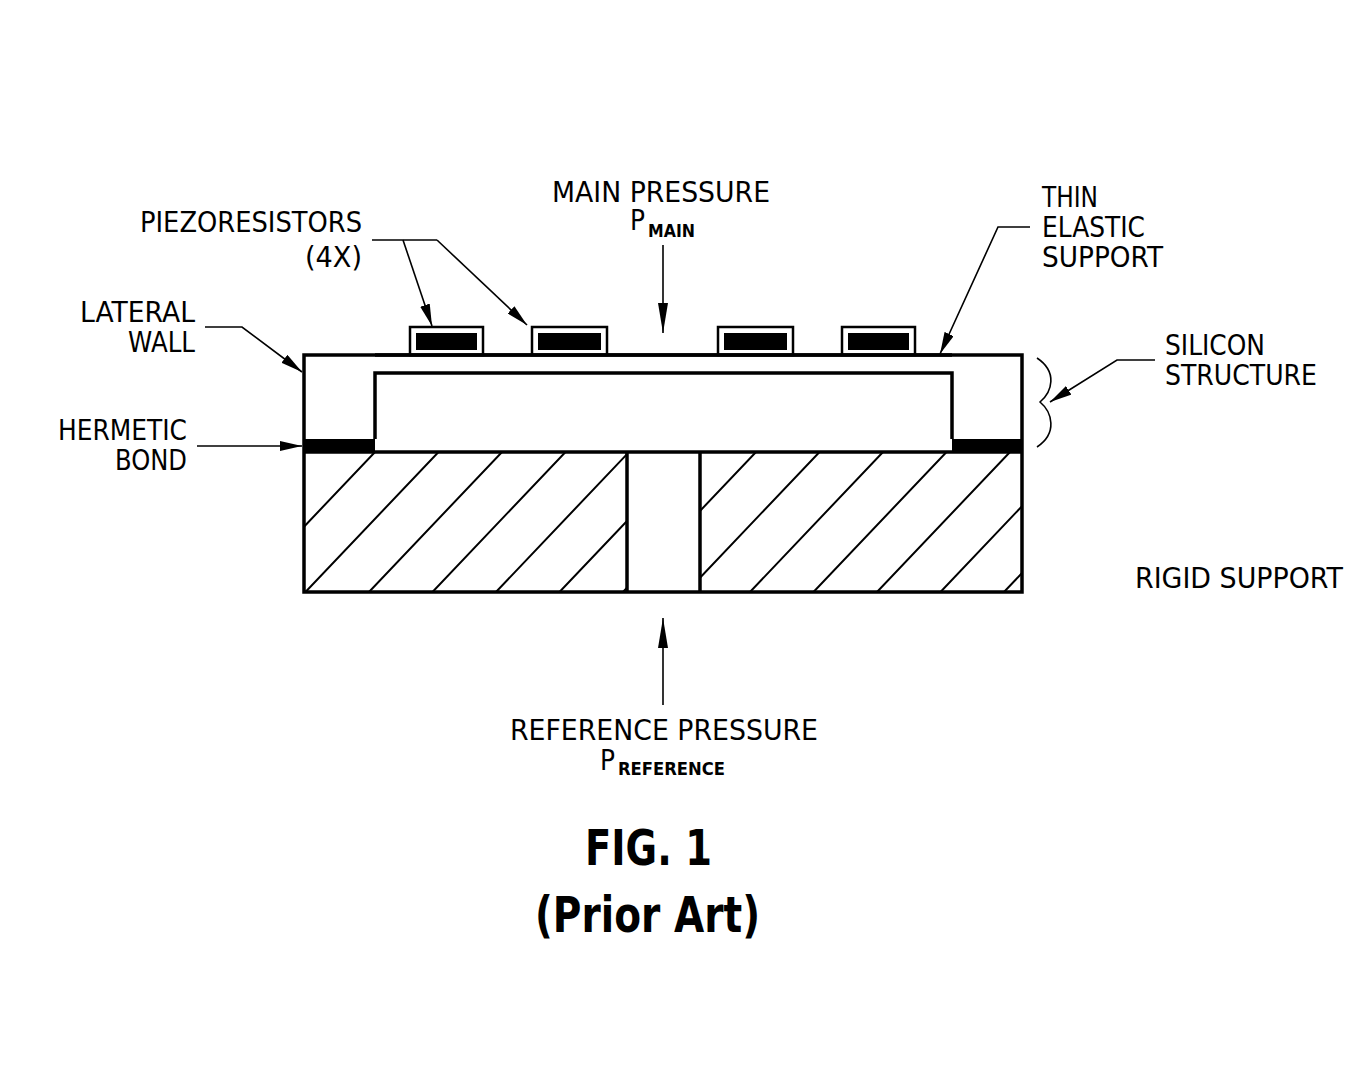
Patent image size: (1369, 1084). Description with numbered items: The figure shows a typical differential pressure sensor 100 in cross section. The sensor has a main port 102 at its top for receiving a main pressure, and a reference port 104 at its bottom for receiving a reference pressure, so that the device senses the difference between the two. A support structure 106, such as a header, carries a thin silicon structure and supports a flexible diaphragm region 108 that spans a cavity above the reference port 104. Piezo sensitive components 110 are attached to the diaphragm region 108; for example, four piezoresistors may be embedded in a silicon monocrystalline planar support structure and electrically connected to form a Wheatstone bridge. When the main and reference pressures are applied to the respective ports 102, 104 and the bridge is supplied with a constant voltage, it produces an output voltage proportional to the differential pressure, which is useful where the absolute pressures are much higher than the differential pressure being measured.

The differential pressure sensor 100 is at (608, 128).
The main port 102 is at (678, 318).
The reference port 104 is at (674, 608).
The support structure 106 is at (1130, 578).
The flexible diaphragm region 108 is at (805, 374).
The piezo sensitive components 110 is at (565, 326).